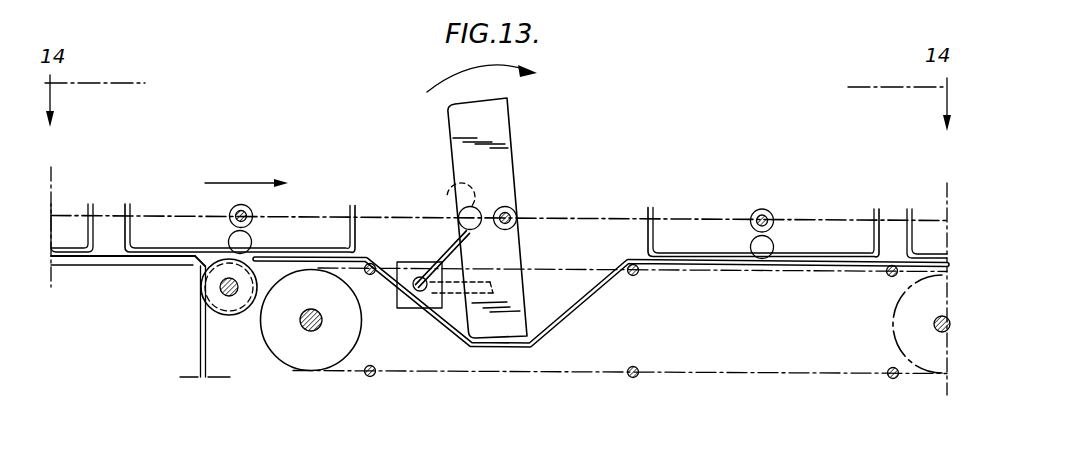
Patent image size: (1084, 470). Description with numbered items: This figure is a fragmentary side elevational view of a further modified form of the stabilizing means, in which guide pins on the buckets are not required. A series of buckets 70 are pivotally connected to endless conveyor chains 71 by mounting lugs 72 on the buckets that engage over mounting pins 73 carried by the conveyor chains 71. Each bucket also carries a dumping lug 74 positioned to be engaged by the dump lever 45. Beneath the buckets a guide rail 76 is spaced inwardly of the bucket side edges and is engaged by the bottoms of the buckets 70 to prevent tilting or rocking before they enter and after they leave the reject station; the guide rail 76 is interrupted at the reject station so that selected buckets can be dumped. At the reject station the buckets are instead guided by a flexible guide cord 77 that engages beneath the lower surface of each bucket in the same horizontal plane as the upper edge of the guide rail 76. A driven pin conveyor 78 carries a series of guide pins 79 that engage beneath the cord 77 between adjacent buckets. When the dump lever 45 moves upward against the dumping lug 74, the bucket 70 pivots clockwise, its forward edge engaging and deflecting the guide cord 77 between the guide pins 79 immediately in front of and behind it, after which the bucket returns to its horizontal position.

The dump lever 45 is at (447, 253).
The bucket 70 is at (133, 203).
The endless conveyor chain 71 is at (592, 217).
The mounting lug 72 is at (253, 213).
The mounting pin 73 is at (232, 222).
The dumping lug 74 is at (253, 241).
The guide rail 76 is at (118, 262).
The flexible guide cord 77 is at (199, 352).
The driven pin conveyor 78 is at (763, 373).
The guide pin 79 is at (371, 277).